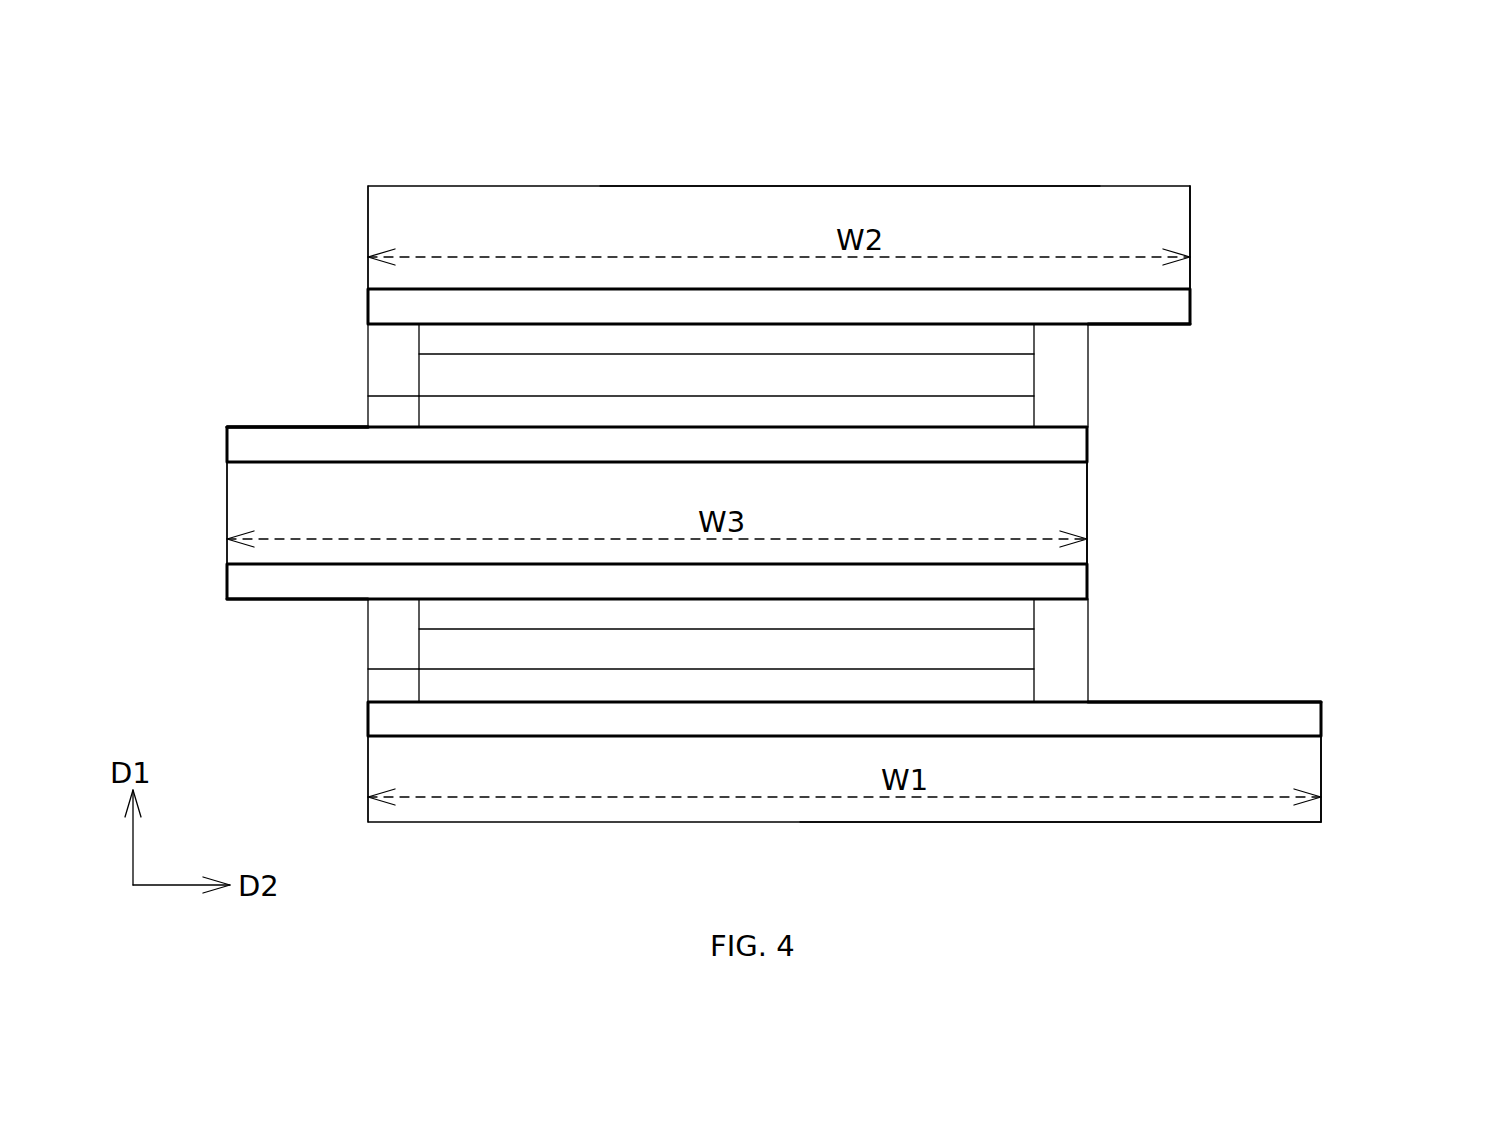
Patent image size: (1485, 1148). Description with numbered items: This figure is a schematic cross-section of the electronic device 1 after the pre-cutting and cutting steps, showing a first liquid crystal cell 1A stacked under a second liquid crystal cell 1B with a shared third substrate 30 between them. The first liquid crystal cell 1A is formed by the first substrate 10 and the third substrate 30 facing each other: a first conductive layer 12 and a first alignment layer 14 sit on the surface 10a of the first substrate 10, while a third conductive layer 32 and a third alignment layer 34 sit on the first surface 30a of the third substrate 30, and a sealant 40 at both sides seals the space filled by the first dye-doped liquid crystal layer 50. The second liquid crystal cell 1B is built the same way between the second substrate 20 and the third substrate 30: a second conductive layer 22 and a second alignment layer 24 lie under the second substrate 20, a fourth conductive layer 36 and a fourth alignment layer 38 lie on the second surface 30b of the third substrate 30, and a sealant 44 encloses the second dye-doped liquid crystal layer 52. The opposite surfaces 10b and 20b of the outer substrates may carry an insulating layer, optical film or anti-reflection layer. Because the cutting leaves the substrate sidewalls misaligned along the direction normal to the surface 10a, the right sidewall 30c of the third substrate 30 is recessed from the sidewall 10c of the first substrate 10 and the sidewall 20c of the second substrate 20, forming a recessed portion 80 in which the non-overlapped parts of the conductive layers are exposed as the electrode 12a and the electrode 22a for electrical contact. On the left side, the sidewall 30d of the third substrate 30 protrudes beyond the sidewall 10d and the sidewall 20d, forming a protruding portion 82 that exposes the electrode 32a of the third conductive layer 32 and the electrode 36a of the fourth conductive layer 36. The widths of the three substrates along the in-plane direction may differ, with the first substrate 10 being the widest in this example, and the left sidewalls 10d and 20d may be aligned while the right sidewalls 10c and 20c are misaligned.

The electronic device 1 is at (1330, 142).
The first liquid crystal cell 1A is at (1353, 822).
The second liquid crystal cell 1B is at (1224, 562).
The first substrate 10 is at (577, 771).
The surface of the first substrate 10a is at (407, 736).
The surface of the first substrate 10b is at (1046, 822).
The sidewall of the first substrate 10c is at (1321, 773).
The sidewall of the first substrate 10d is at (367, 780).
The first conductive layer 12 is at (385, 720).
The electrode 12a is at (1320, 695).
The first alignment layer 14 is at (437, 680).
The second substrate 20 is at (716, 228).
The surface of the second substrate 20b is at (1046, 186).
The sidewall of the second substrate 20c is at (1190, 275).
The sidewall of the second substrate 20d is at (367, 237).
The second conductive layer 22 is at (385, 305).
The electrode 22a is at (1188, 325).
The second alignment layer 24 is at (437, 346).
The third substrate 30 is at (537, 503).
The first surface of the third substrate 30a is at (248, 563).
The second surface of the third substrate 30b is at (248, 463).
The sidewall of the third substrate 30c is at (1087, 512).
The sidewall of the third substrate 30d is at (227, 512).
The third conductive layer 32 is at (250, 591).
The electrode 32a is at (367, 602).
The third alignment layer 34 is at (433, 605).
The fourth conductive layer 36 is at (250, 440).
The electrode 36a is at (367, 420).
The fourth alignment layer 38 is at (437, 418).
The sealant 40 is at (412, 669).
The sealant 44 is at (412, 397).
The first dye-doped liquid crystal layer 50 is at (715, 667).
The second dye-doped liquid crystal layer 52 is at (715, 393).
The recessed portion 80 is at (1126, 548).
The protruding portion 82 is at (225, 388).